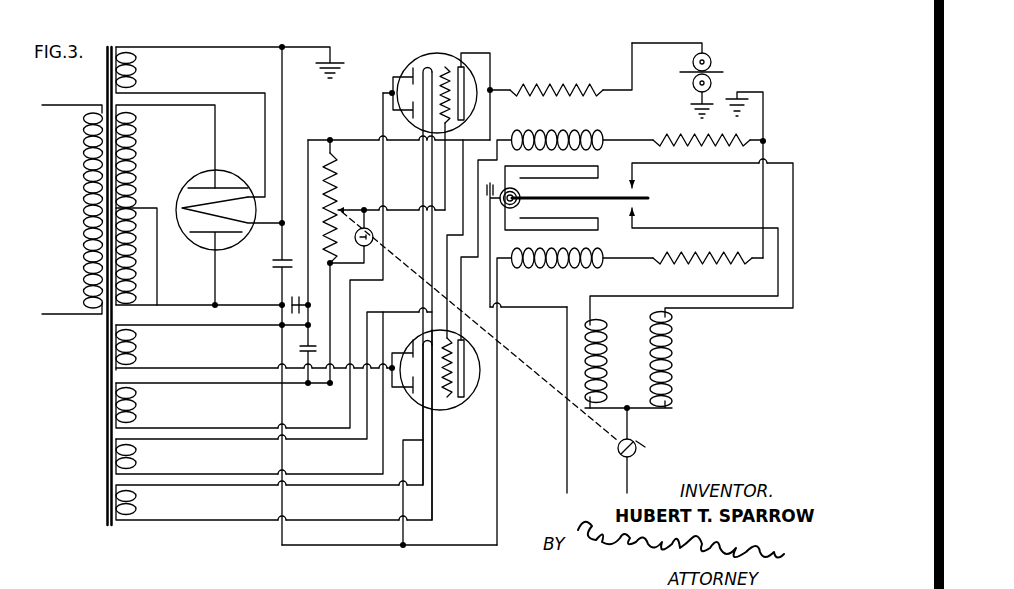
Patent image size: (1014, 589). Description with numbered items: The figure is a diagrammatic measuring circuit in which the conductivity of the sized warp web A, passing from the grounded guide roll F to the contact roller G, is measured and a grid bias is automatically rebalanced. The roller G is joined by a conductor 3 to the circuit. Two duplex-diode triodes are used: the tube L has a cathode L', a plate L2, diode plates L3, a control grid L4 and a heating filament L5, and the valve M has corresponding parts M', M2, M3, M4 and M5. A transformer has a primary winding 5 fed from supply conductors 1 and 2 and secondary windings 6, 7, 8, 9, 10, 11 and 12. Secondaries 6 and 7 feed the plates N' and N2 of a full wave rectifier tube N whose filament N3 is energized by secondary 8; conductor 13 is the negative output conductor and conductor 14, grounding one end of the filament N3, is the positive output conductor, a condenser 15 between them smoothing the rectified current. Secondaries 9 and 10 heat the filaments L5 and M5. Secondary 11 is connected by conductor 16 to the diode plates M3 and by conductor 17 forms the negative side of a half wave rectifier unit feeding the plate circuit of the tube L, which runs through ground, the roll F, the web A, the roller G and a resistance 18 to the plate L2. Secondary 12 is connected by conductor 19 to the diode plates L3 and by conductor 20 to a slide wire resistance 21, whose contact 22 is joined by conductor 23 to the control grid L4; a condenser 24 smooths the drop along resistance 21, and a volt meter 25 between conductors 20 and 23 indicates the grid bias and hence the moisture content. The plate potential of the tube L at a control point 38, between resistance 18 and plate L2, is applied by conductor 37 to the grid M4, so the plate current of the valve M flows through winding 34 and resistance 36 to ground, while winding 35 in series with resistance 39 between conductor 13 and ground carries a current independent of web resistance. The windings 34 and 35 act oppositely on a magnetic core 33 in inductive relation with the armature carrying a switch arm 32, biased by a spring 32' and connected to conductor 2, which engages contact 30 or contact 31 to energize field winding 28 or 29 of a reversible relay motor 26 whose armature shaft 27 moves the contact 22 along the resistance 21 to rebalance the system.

The supply conductor 1 is at (62, 105).
The supply conductor 2 is at (63, 315).
The conductor 3 is at (654, 43).
The primary winding 5 is at (84, 190).
The secondary winding 6 is at (137, 137).
The secondary winding 7 is at (137, 257).
The secondary winding 8 is at (137, 72).
The secondary winding 9 is at (137, 462).
The secondary winding 10 is at (137, 508).
The secondary winding 11 is at (137, 348).
The secondary winding 12 is at (137, 405).
The conductor 13 is at (228, 303).
The conductor 14 is at (300, 45).
The condenser 15 is at (271, 261).
The conductor 16 is at (182, 368).
The conductor 17 is at (331, 138).
The resistance 18 is at (555, 88).
The conductor 19 is at (324, 408).
The conductor 20 is at (244, 383).
The slide wire resistance 21 is at (335, 173).
The contact 22 is at (344, 209).
The conductor 23 is at (443, 180).
The condenser 24 is at (265, 353).
The volt meter 25 is at (372, 237).
The reversible relay motor 26 is at (690, 405).
The motor armature shaft 27 is at (503, 347).
The field winding 28 is at (672, 363).
The field winding 29 is at (607, 361).
The switch contact 30 is at (634, 186).
The switch contact 31 is at (634, 216).
The switch arm 32 is at (580, 210).
The spring 32' is at (499, 235).
The magnetic core 33 is at (560, 228).
The winding 34 is at (555, 130).
The winding 35 is at (545, 268).
The resistance 36 is at (705, 147).
The conductor 37 is at (448, 295).
The control point 38 is at (490, 90).
The resistance 39 is at (690, 262).
The full wave rectifier tube N is at (216, 197).
The plate N' is at (205, 171).
The plate N2 is at (205, 236).
The filament N3 is at (182, 208).
The thermionic tube L is at (424, 90).
The cathode L' is at (415, 258).
The plate L2 is at (462, 77).
The diode plates L3 is at (393, 72).
The control grid L4 is at (447, 67).
The heating filament L5 is at (433, 65).
The valve M is at (442, 378).
The cathode M' is at (419, 328).
The plate M2 is at (462, 370).
The diode plates M3 is at (413, 353).
The control grid M4 is at (442, 398).
The heating filament M5 is at (442, 340).
The web A is at (685, 72).
The contact roller G is at (708, 58).
The guide roll F is at (712, 83).